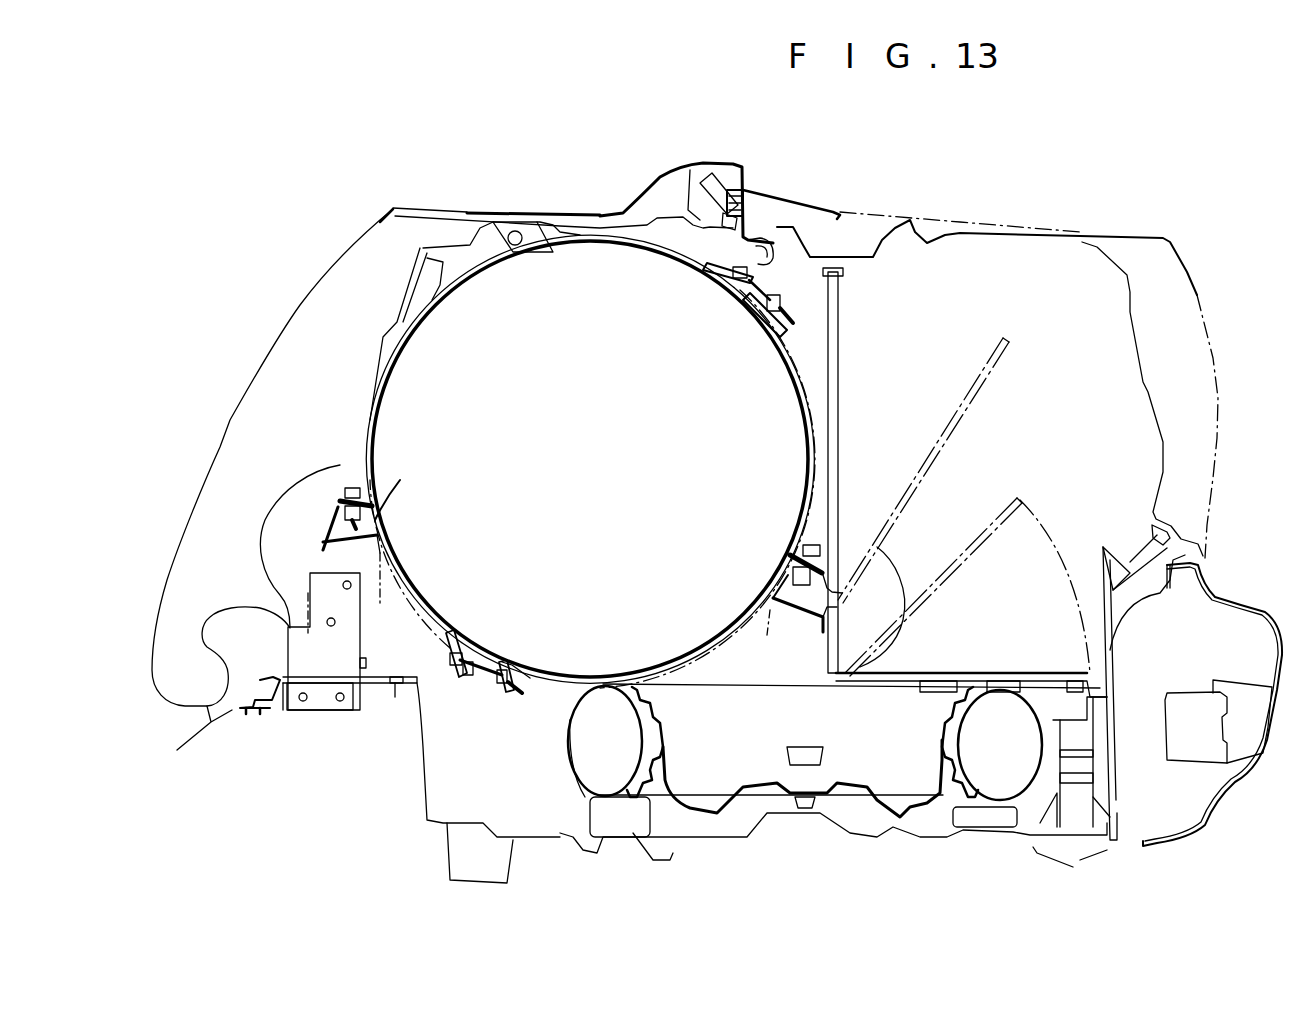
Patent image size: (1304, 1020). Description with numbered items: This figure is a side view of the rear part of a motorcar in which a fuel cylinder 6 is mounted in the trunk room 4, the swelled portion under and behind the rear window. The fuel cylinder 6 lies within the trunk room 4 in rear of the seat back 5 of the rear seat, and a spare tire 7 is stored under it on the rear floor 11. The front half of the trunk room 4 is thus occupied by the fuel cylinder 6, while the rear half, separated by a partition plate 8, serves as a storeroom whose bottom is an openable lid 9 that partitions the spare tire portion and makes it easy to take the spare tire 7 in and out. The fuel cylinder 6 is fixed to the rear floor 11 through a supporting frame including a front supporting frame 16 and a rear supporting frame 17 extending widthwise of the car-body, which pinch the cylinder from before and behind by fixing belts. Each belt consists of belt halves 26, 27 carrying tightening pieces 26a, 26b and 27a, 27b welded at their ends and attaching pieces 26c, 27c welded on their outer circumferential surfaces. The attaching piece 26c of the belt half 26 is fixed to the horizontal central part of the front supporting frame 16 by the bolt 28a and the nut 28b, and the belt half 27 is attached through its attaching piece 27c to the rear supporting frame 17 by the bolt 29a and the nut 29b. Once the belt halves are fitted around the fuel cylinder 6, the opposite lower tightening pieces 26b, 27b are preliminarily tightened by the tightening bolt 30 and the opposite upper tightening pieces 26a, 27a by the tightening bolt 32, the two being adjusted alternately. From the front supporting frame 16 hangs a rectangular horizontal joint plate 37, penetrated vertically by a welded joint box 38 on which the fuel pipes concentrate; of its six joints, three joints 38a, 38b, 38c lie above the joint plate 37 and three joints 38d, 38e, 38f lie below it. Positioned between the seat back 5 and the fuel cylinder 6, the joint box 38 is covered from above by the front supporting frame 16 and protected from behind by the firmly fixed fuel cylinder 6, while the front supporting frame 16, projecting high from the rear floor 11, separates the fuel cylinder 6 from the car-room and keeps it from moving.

The trunk room 4 is at (1100, 405).
The seat back 5 is at (257, 377).
The fuel cylinder 6 is at (578, 300).
The spare tire 7 is at (570, 740).
The partition plate 8 is at (845, 407).
The openable lid 9 is at (973, 673).
The rear floor 11 is at (727, 837).
The front supporting frame 16 is at (327, 527).
The rear supporting frame 17 is at (840, 593).
The belt half 26 is at (497, 247).
The tightening piece 26a is at (747, 277).
The tightening piece 26b is at (447, 677).
The attaching piece 26c is at (340, 497).
The belt half 27 is at (710, 647).
The tightening piece 27a is at (807, 283).
The tightening piece 27b is at (495, 687).
The attaching piece 27c is at (833, 620).
The bolt 28a is at (357, 490).
The nut 28b is at (337, 517).
The bolt 29a is at (830, 567).
The nut 29b is at (803, 587).
The tightening bolt 30 is at (473, 677).
The tightening bolt 32 is at (767, 287).
The joint plate 37 is at (277, 677).
The joint box 38 is at (358, 637).
The joint 38a is at (326, 620).
The joint 38b is at (343, 585).
The joint 38c is at (367, 663).
The joint 38d is at (341, 702).
The joint 38e is at (303, 702).
The joint 38f is at (281, 708).